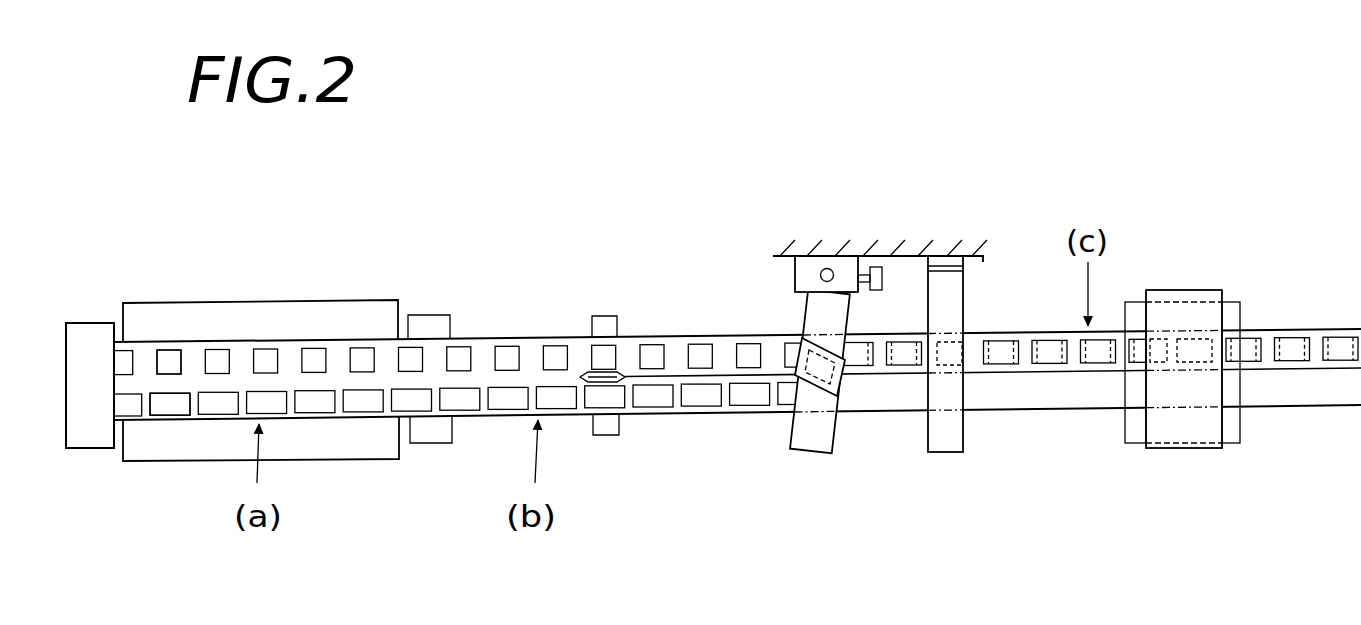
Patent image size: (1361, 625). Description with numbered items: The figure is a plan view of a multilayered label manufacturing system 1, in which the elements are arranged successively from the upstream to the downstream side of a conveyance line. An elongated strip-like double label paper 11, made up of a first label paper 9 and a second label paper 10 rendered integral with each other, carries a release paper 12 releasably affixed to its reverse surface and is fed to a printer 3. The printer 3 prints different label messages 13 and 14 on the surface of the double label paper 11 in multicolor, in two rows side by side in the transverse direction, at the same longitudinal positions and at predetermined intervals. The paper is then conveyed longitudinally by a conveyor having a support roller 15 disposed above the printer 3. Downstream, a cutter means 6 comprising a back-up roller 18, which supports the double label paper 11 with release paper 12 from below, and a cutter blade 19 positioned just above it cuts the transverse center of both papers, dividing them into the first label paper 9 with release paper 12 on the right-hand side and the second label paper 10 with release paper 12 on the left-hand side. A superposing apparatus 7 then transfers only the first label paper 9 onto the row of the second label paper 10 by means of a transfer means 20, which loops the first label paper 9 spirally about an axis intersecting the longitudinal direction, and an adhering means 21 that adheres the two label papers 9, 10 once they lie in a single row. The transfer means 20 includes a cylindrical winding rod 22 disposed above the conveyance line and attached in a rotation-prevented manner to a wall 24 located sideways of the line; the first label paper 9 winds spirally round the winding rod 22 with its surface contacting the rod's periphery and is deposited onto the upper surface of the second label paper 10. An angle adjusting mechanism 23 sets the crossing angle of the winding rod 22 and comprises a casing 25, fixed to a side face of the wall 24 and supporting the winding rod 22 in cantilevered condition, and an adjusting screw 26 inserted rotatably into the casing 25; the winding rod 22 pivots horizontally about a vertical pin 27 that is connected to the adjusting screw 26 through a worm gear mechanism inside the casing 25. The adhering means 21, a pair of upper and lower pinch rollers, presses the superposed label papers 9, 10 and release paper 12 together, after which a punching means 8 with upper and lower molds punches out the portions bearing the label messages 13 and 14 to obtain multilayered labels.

The multilayered label manufacturing system 1 is at (731, 319).
The printer 3 is at (228, 298).
The cutter means 6 is at (609, 310).
The superposing apparatus 7 is at (924, 224).
The punching means 8 is at (1189, 288).
The first label paper 9 is at (710, 414).
The second label paper 10 is at (718, 336).
The double label paper 11 is at (293, 350).
The release paper 12 is at (1048, 407).
The label message 13 is at (175, 410).
The label message 14 is at (168, 358).
The support roller 15 is at (430, 315).
The back-up roller 18 is at (604, 436).
The cutter blade 19 is at (588, 373).
The transfer means 20 is at (810, 455).
The adhering means 21 is at (948, 453).
The winding rod 22 is at (791, 428).
The angle adjusting mechanism 23 is at (814, 204).
The wall 24 is at (983, 264).
The casing 25 is at (795, 278).
The adjusting screw 26 is at (875, 233).
The pin 27 is at (826, 268).